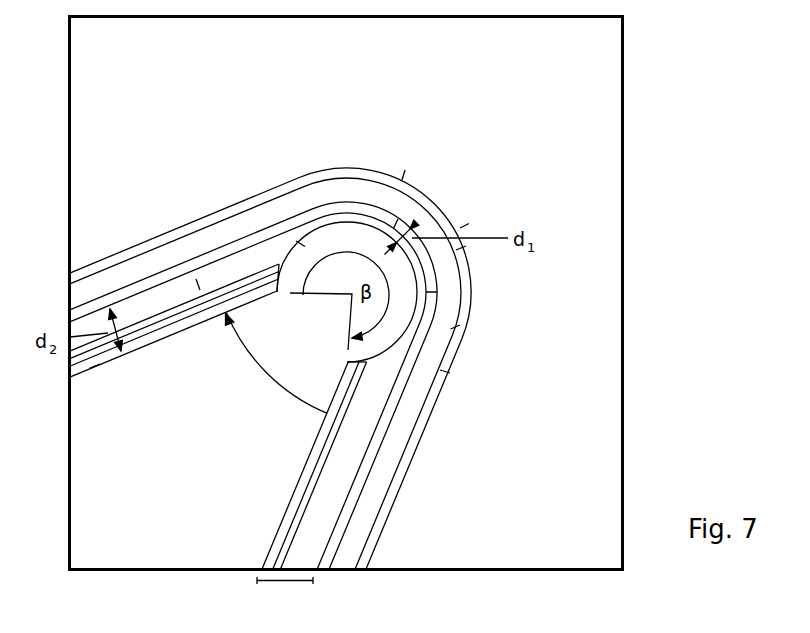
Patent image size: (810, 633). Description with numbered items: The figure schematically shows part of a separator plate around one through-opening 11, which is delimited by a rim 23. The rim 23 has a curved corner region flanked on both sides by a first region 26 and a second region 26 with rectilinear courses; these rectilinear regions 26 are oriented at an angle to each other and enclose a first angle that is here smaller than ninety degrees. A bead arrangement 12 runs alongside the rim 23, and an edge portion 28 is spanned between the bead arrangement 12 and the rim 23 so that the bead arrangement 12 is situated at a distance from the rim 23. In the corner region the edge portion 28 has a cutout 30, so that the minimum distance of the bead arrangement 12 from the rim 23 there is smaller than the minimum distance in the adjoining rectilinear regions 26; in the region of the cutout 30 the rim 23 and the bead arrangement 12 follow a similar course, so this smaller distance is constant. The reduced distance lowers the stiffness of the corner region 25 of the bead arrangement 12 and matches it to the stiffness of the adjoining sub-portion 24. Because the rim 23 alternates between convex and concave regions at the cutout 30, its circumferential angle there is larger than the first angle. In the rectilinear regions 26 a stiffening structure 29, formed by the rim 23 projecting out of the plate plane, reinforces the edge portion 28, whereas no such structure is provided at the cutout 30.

The through-opening 11 is at (254, 411).
The bead arrangement 12 is at (393, 430).
The rim 23 is at (192, 327).
The sub-portion of the bead arrangement 24 is at (357, 520).
The corner region of the bead arrangement 25 is at (389, 208).
The first region of the rim 26 is at (99, 367).
The edge portion 28 is at (170, 300).
The stiffening structure 29 is at (100, 362).
The cutout 30 is at (392, 296).